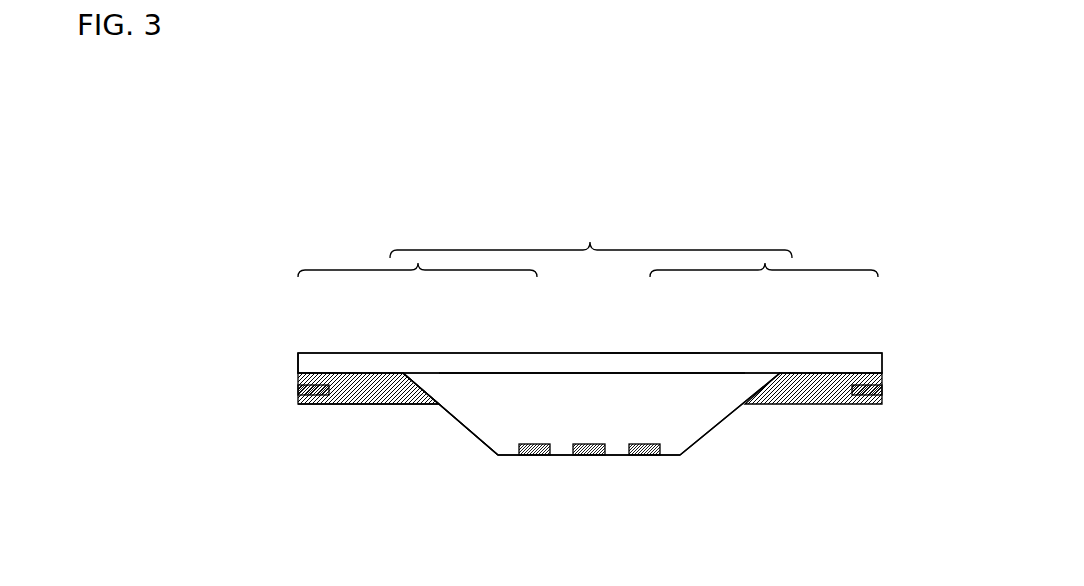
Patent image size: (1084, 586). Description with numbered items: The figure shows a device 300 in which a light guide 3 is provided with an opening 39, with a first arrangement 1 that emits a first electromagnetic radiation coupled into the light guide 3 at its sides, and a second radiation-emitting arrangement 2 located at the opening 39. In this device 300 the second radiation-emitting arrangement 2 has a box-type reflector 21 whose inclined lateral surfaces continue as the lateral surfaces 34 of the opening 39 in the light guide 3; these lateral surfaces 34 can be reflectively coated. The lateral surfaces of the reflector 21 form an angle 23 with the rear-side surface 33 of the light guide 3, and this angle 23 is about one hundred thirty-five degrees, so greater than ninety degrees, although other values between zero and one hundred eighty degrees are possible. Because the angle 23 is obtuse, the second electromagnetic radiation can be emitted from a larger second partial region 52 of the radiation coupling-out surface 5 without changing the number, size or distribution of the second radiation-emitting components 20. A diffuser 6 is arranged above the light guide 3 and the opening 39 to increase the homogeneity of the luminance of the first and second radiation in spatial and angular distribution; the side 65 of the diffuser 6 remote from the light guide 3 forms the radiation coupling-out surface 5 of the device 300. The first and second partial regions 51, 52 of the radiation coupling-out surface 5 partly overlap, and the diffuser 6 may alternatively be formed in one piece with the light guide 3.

The device 300 is at (419, 80).
The first arrangement 1 is at (318, 388).
The second radiation-emitting arrangement 2 is at (507, 433).
The light guide 3 is at (365, 388).
The radiation coupling-out surface 5 is at (816, 353).
The diffuser 6 is at (308, 363).
The second radiation-emitting components 20 is at (650, 457).
The reflector 21 is at (700, 437).
The angle 23 is at (421, 409).
The rear-side surface 33 is at (345, 405).
The lateral surfaces 34 is at (410, 378).
The opening 39 is at (585, 388).
The first partial region 51 is at (418, 263).
The second partial region 52 is at (590, 242).
The side of the diffuser remote from the light guide 65 is at (645, 353).